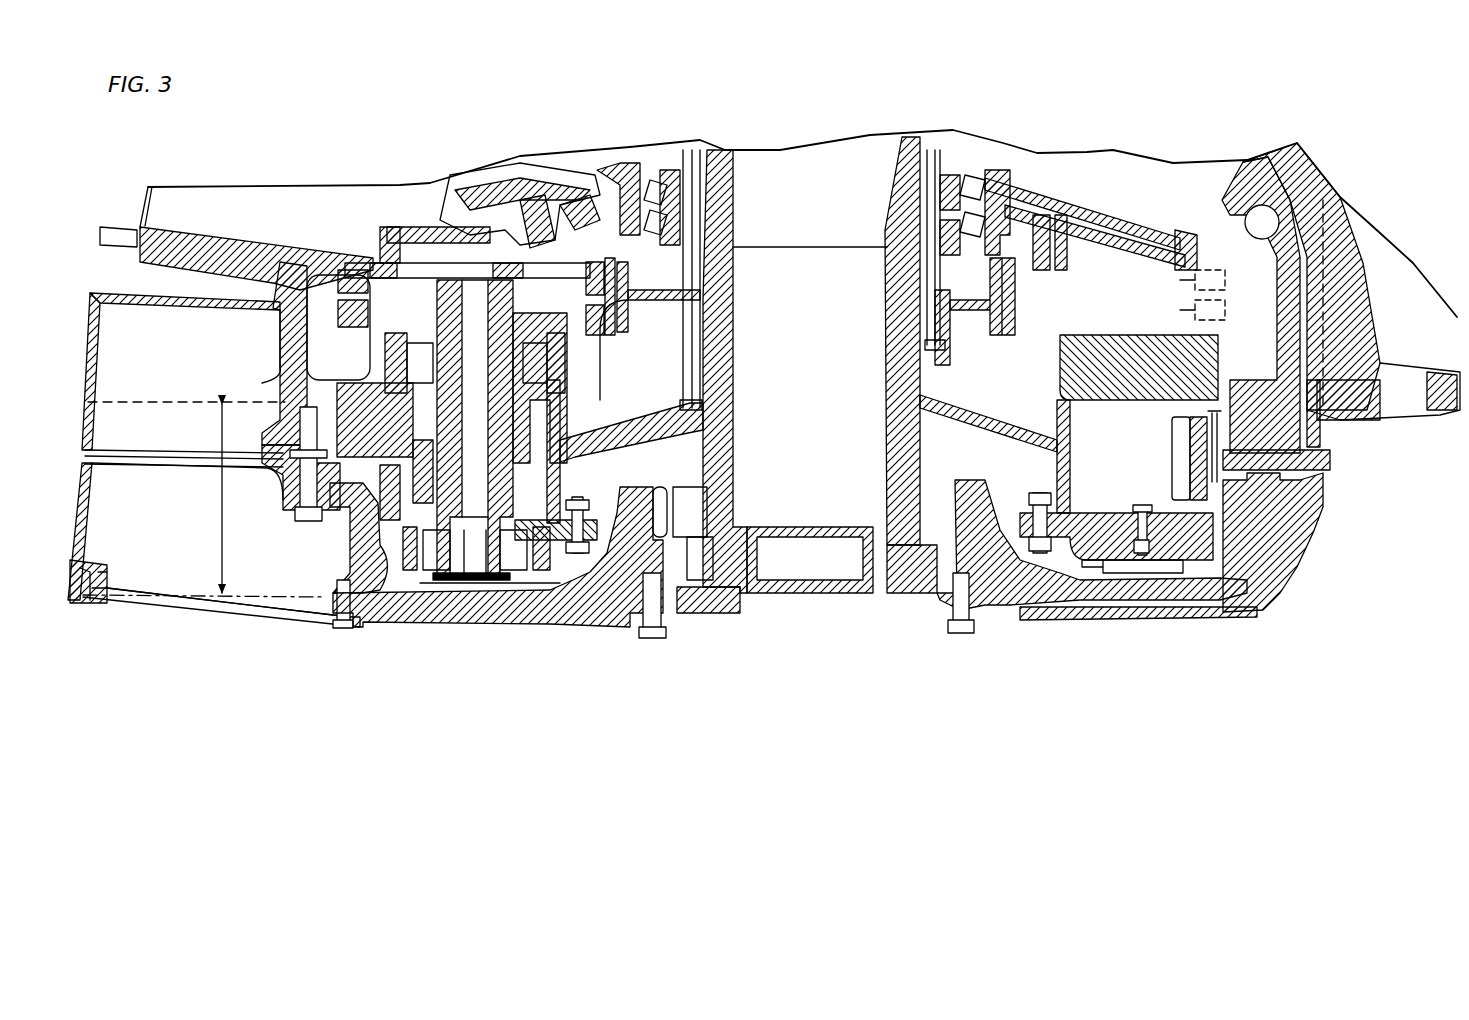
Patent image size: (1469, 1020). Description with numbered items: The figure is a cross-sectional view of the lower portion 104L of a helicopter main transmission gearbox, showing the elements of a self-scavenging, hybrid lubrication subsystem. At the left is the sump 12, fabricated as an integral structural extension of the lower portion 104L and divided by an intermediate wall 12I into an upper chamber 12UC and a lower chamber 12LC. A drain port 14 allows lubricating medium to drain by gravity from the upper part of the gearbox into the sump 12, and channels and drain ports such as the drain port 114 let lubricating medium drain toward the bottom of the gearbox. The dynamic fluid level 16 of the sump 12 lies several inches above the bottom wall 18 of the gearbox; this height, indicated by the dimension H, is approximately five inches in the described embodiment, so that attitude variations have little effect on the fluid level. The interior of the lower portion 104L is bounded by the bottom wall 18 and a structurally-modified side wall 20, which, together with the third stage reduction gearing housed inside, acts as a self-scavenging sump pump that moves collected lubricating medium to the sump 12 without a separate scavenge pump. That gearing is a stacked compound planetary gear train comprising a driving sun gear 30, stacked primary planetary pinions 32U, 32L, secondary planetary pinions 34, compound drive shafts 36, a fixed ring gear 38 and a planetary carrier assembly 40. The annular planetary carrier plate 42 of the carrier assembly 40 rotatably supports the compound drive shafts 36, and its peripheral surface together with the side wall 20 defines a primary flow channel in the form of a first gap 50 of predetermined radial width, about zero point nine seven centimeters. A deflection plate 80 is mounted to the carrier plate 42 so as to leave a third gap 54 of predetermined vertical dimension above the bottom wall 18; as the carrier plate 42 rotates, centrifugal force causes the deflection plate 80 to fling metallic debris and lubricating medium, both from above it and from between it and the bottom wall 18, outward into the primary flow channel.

The sump 12 is at (62, 418).
The upper chamber 12UC is at (112, 357).
The lower chamber 12LC is at (135, 566).
The intermediate wall 12I is at (145, 452).
The drain port 14 is at (285, 340).
The dynamic fluid level 16 is at (128, 417).
The bottom wall 18 is at (520, 590).
The structurally-modified side wall 20 is at (388, 590).
The driving sun gear 30 is at (633, 287).
The upper primary planetary pinion 32U is at (594, 275).
The lower primary planetary pinion 32L is at (600, 322).
The secondary planetary pinion 34 is at (513, 437).
The compound drive shaft 36 is at (475, 429).
The fixed ring gear 38 is at (407, 477).
The planetary carrier assembly 40 is at (611, 440).
The annular planetary carrier plate 42 is at (1247, 533).
The first gap 50 is at (1225, 533).
The third gap 54 is at (1165, 560).
The deflection plate 80 is at (440, 582).
The lower portion of the main transmission gearbox 104L is at (484, 622).
The drain port 114 is at (515, 237).
The height of dynamic fluid level H is at (220, 507).